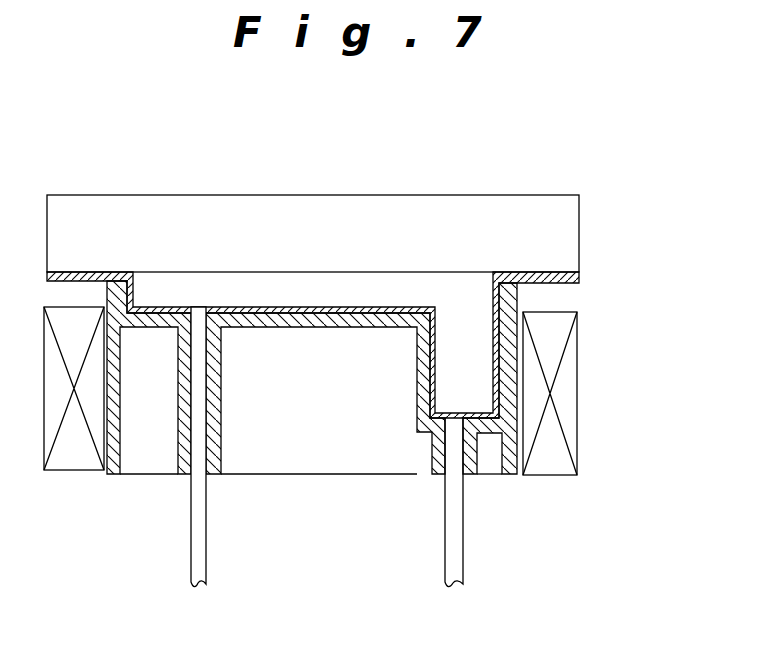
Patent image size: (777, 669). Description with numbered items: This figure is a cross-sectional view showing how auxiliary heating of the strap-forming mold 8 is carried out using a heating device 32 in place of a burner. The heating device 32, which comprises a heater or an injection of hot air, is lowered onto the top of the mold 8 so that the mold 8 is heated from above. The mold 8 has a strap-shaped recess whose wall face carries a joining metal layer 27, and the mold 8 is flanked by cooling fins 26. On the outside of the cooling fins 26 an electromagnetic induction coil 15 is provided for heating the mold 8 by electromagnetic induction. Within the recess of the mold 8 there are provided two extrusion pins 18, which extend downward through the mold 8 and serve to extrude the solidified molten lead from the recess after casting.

The heating device 32 is at (553, 227).
The mold 8 is at (517, 298).
The cooling fins 26 is at (120, 433).
The joining metal layer 27 is at (493, 332).
The electromagnetic induction coil 15 is at (577, 342).
The extrusion pins 18 is at (200, 543).